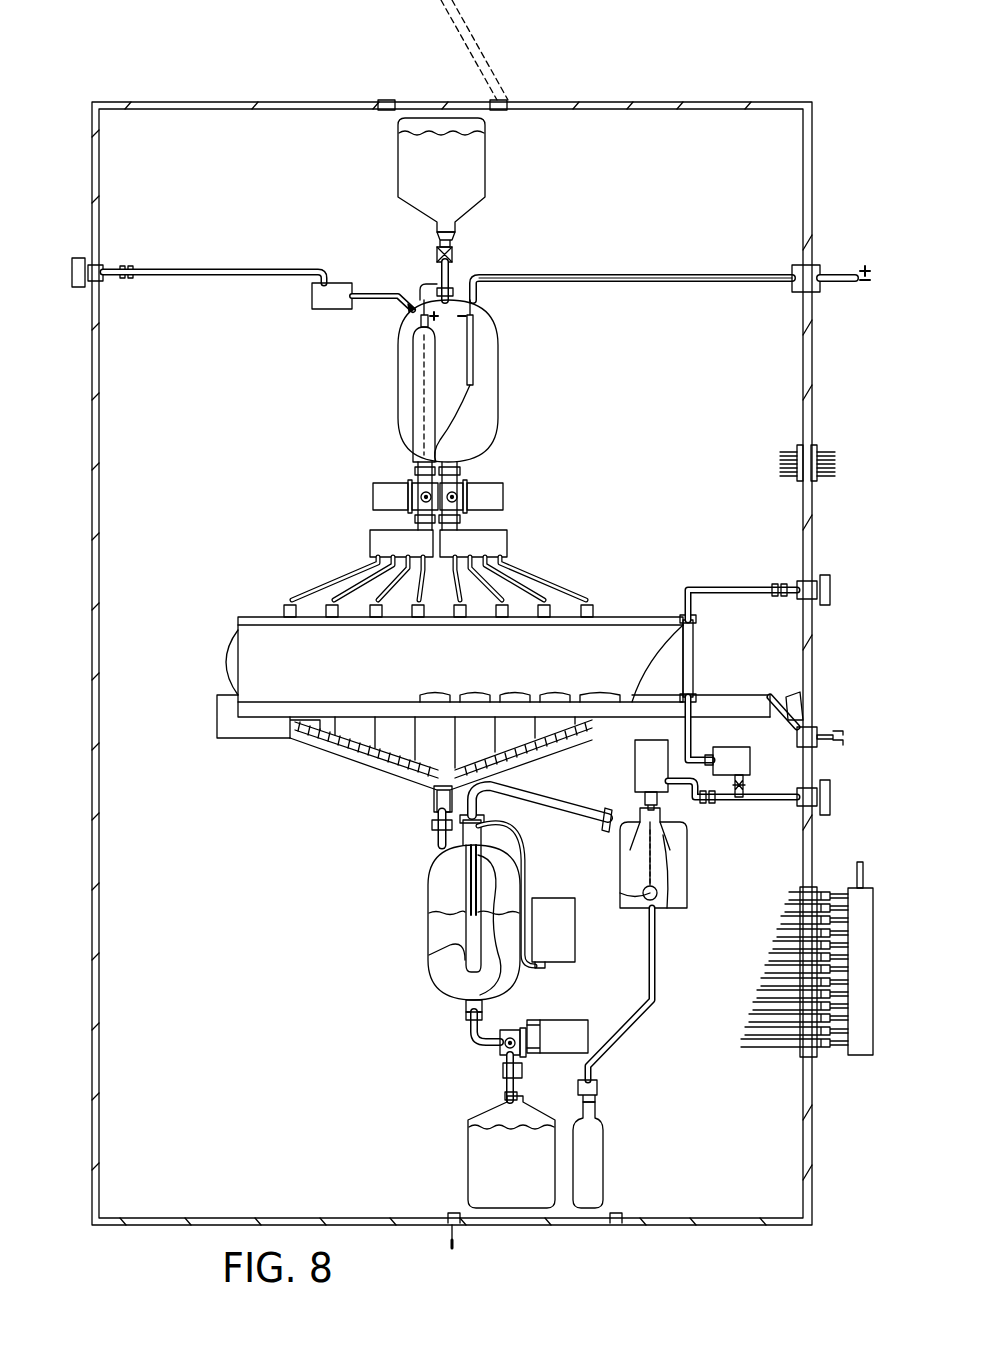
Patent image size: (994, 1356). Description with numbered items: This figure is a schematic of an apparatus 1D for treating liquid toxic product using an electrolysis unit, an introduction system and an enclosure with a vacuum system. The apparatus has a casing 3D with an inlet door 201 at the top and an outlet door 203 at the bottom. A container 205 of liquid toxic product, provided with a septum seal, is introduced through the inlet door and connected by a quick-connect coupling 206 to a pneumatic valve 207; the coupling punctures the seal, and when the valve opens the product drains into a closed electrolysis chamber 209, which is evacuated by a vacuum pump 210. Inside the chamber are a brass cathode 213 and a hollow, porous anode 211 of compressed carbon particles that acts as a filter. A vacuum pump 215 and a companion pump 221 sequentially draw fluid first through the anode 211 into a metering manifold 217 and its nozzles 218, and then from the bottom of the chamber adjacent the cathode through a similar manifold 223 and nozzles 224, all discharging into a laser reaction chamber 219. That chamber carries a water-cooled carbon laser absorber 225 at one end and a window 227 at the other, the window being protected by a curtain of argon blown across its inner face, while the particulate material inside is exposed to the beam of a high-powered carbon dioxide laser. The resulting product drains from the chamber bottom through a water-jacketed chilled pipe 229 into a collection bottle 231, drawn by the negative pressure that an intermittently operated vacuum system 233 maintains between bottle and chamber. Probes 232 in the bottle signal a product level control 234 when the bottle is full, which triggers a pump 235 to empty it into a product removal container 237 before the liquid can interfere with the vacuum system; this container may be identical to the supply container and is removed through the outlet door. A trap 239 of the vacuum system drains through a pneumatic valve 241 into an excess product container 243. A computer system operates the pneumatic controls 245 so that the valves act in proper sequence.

The apparatus 1D is at (75, 123).
The casing 3D is at (185, 102).
The inlet door 201 is at (386, 100).
The outlet door 203 is at (575, 1225).
The container 205 is at (470, 182).
The bottle fitting 206 is at (438, 235).
The pneumatic valve 207 is at (436, 256).
The electrolysis chamber 209 is at (398, 410).
The vacuum pump 210 is at (322, 306).
The anode 211 is at (411, 370).
The cathode 213 is at (472, 371).
The vacuum pump 215 is at (373, 498).
The metering manifold 217 is at (370, 545).
The nozzles 218 is at (290, 603).
The laser reaction chamber 219 is at (265, 628).
The companion pump 221 is at (490, 490).
The manifold 223 is at (497, 541).
The nozzles 224 is at (594, 601).
The laser absorber 225 is at (230, 650).
The window 227 is at (695, 646).
The chilled pipe 229 is at (392, 760).
The collection bottle 231 is at (435, 893).
The probes 232 is at (432, 958).
The vacuum system 233 is at (694, 812).
The product level control 234 is at (558, 933).
The pump 235 is at (570, 1033).
The product removal container 237 is at (470, 1173).
The trap 239 is at (678, 896).
The pneumatic valve 241 is at (598, 1086).
The excess product container 243 is at (598, 1147).
The pneumatic controls 245 is at (858, 1055).